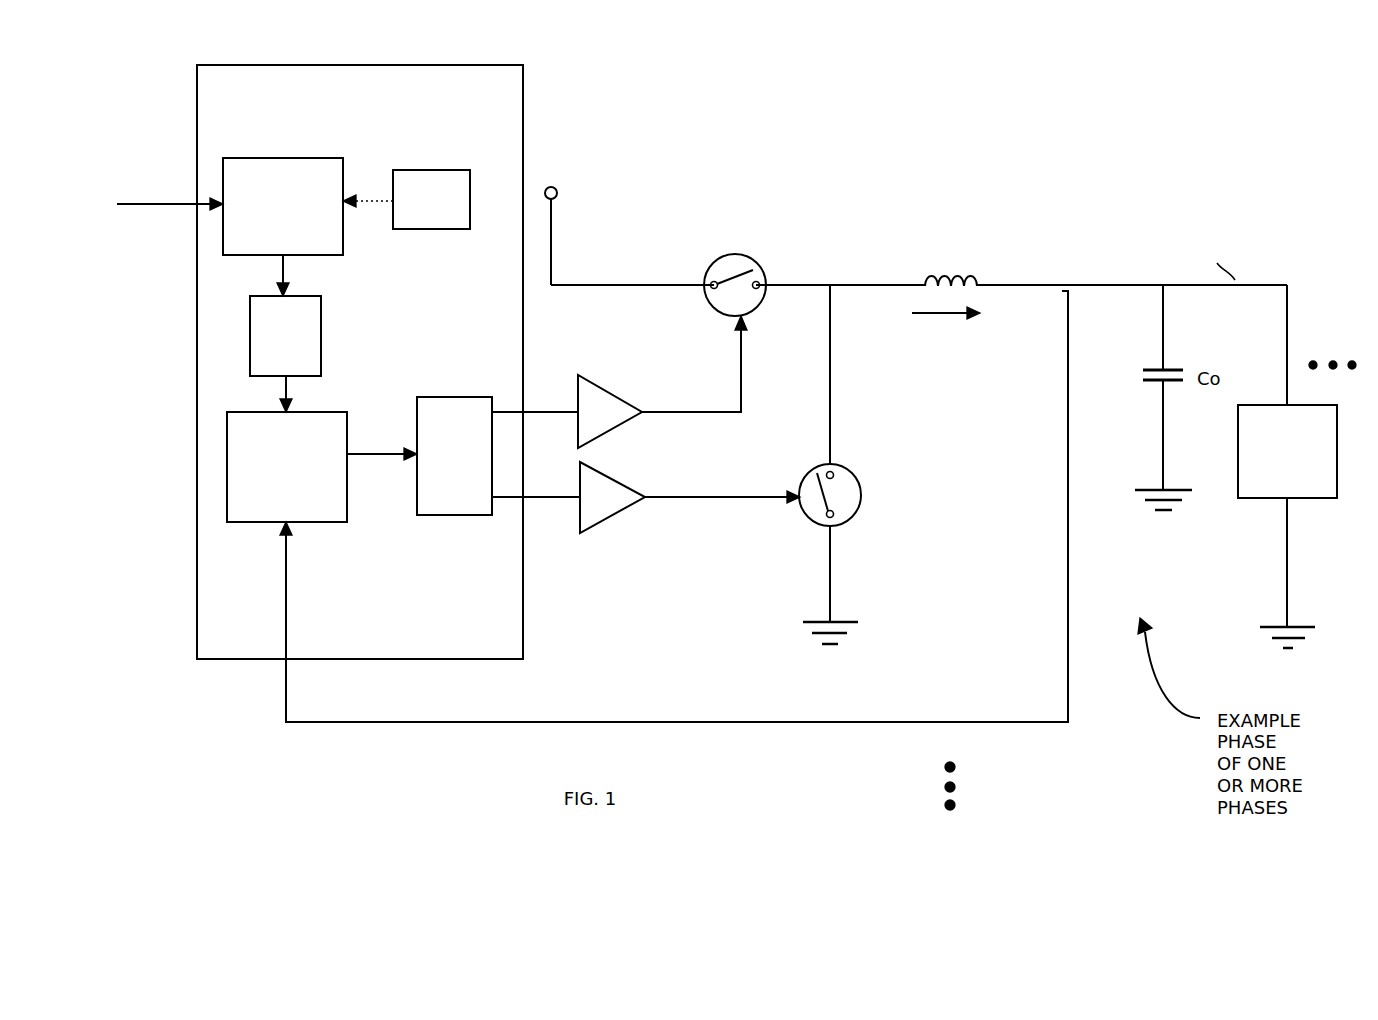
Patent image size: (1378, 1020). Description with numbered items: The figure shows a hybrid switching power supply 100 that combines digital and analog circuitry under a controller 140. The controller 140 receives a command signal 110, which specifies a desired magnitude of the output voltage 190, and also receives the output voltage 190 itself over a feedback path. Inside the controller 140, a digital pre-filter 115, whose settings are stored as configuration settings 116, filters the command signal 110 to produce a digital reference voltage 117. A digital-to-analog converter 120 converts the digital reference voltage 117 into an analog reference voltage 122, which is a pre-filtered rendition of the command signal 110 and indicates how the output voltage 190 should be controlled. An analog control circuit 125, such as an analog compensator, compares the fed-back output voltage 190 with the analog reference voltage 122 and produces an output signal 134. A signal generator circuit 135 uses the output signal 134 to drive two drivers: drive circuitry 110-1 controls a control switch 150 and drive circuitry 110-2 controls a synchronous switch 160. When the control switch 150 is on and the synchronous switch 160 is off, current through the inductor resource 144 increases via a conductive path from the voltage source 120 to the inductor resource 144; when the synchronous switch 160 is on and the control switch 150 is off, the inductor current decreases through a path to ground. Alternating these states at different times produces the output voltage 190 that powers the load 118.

The power supply 100 is at (866, 177).
The command signal 110 is at (166, 196).
The drive circuitry 110-1 is at (627, 395).
The drive circuitry 110-2 is at (612, 528).
The digital pre-filter 115 is at (266, 241).
The configuration settings 116 is at (414, 222).
The digital reference voltage 117 is at (295, 268).
The load 118 is at (1270, 474).
The digital-to-analog converter 120 is at (633, 109).
The analog reference voltage 122 is at (275, 390).
The analog control circuit 125 is at (270, 511).
The output signal 134 is at (373, 463).
The signal generator circuit 135 is at (438, 479).
The controller 140 is at (343, 126).
The inductor resource 144 is at (953, 267).
The control switch 150 is at (736, 252).
The synchronous switch 160 is at (863, 495).
The output voltage 190 is at (1092, 283).